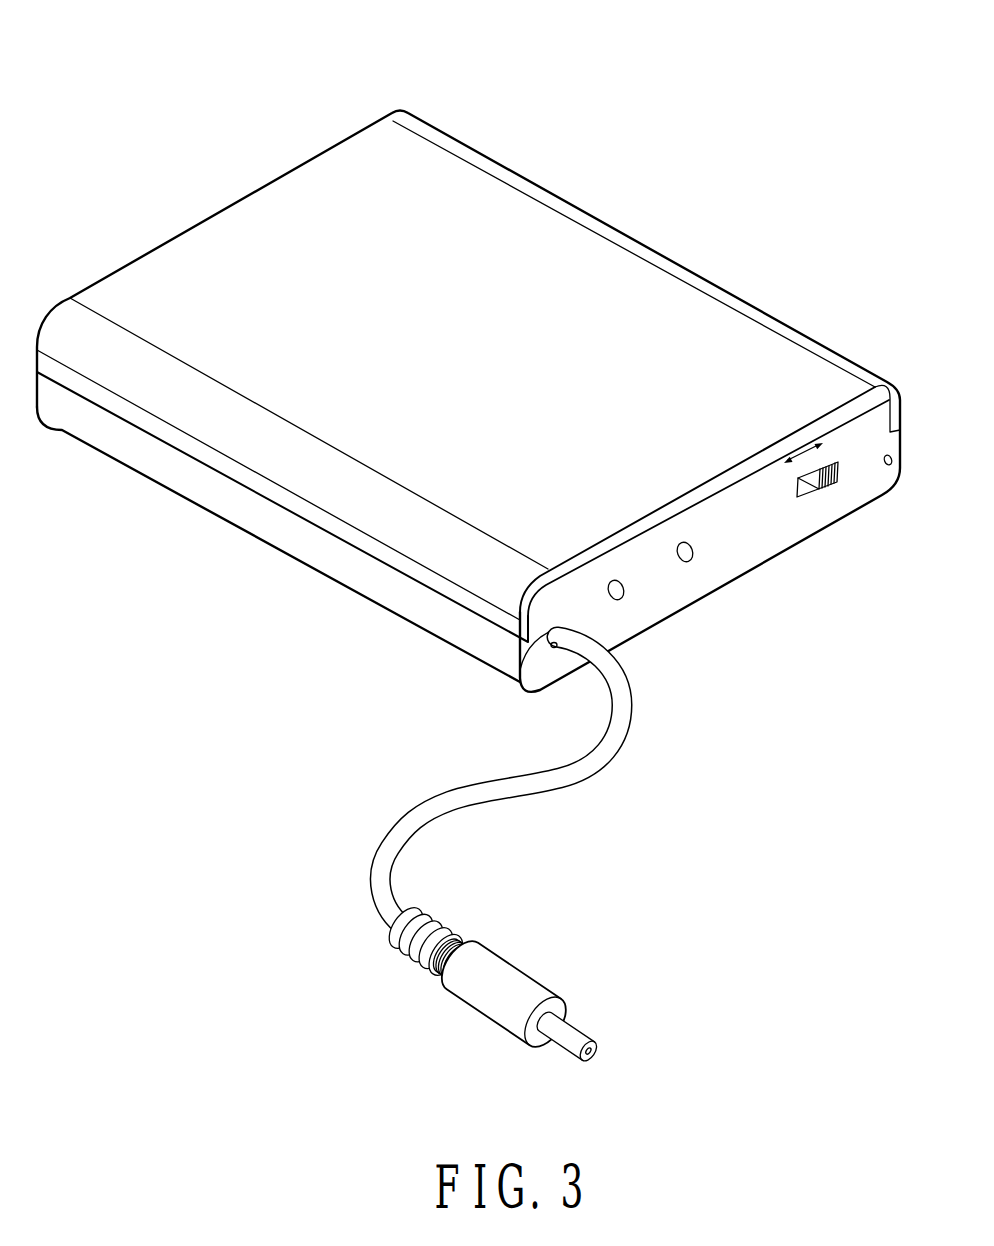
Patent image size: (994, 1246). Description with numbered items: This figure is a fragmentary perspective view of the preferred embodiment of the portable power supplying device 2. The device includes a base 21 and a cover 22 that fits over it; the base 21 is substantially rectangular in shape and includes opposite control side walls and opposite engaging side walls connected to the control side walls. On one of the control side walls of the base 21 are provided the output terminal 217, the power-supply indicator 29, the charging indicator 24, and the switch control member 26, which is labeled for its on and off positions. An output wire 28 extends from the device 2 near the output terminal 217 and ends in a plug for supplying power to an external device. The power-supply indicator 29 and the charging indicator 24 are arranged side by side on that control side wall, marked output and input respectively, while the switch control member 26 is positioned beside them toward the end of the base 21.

The portable power supplying device 2 is at (494, 136).
The base 21 is at (815, 560).
The cover 22 is at (630, 267).
The charging indicator 24 is at (693, 555).
The switch control member 26 is at (827, 482).
The output wire 28 is at (557, 783).
The power-supply indicator 29 is at (624, 594).
The output terminal 217 is at (523, 656).